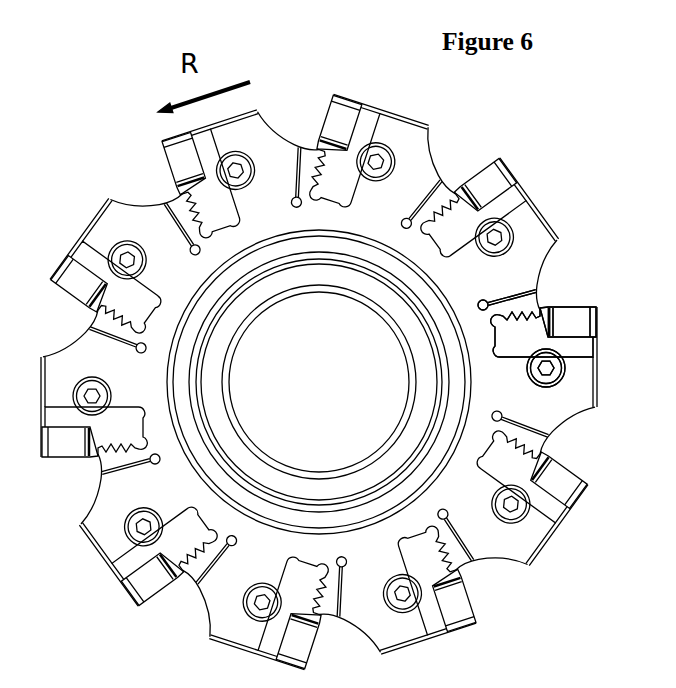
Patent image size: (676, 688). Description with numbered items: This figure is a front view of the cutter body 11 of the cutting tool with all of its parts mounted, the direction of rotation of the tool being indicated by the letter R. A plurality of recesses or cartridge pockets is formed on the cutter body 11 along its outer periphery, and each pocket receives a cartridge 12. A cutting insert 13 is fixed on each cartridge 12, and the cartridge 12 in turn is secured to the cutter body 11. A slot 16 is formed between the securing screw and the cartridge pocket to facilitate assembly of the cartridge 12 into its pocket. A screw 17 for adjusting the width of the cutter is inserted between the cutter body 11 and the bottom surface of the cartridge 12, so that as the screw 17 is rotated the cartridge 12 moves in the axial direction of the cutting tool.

The cutter body 11 is at (532, 225).
The cartridge 12 is at (583, 347).
The cutting insert 13 is at (583, 317).
The slot 16 is at (513, 288).
The screw 17 is at (560, 378).